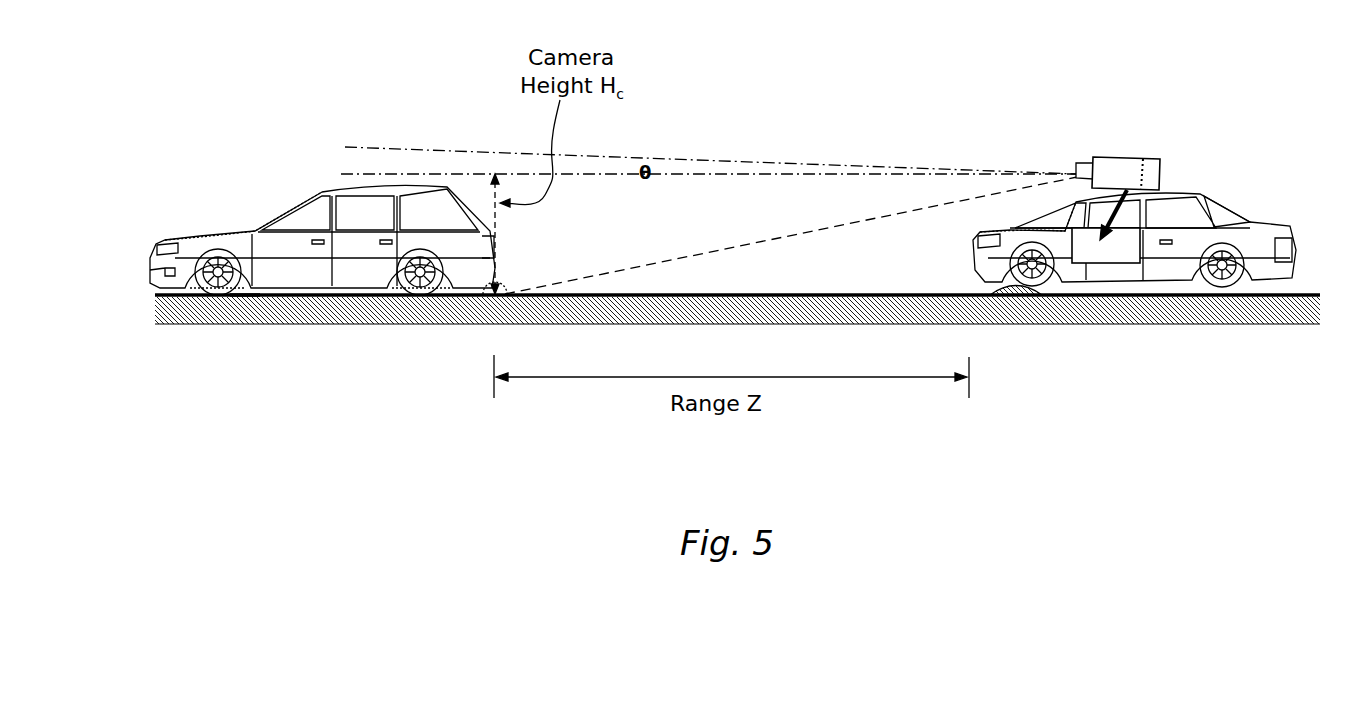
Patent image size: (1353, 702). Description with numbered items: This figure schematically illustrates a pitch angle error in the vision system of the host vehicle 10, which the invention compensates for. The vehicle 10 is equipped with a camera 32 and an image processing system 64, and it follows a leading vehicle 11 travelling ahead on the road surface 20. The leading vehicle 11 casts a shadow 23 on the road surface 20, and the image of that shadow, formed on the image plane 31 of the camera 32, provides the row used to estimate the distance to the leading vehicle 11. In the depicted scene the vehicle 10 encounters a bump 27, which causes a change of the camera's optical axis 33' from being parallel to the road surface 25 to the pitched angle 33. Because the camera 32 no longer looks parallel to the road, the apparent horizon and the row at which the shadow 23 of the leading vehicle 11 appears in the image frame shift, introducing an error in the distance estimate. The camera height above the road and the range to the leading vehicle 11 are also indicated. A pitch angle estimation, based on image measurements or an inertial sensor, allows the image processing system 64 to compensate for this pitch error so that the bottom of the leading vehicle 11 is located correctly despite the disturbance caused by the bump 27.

The vehicle 10 is at (1261, 184).
The vehicle 11 is at (294, 180).
The road surface 20 is at (1268, 325).
The shadow 23 is at (252, 297).
The road surface 25 is at (490, 313).
The bump 27 is at (1010, 294).
The image plane 31 is at (1160, 176).
The camera 32 is at (1120, 172).
The angle 33 is at (710, 114).
The optical axis 33' is at (708, 121).
The image processing system 64 is at (1090, 252).